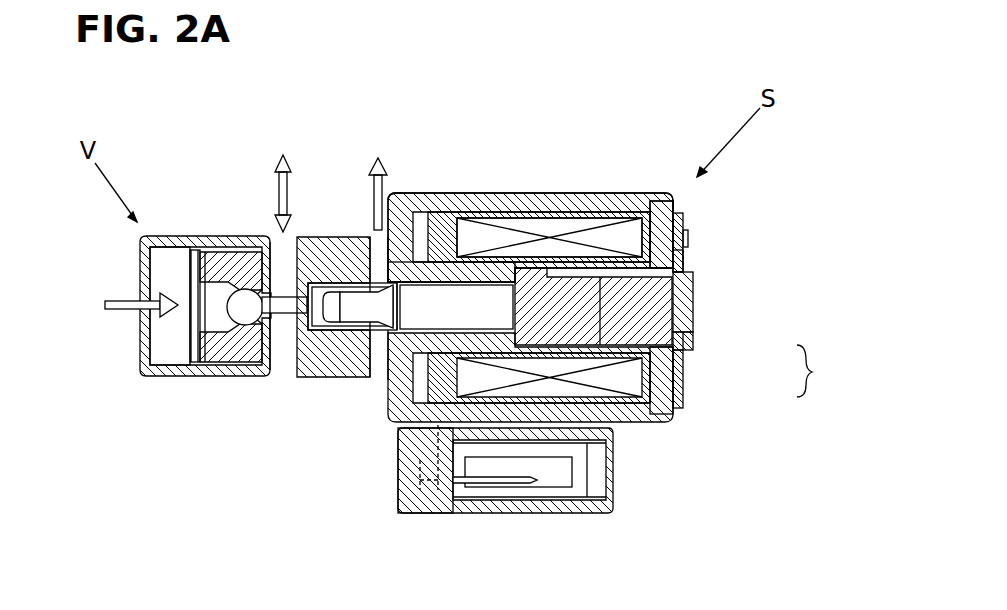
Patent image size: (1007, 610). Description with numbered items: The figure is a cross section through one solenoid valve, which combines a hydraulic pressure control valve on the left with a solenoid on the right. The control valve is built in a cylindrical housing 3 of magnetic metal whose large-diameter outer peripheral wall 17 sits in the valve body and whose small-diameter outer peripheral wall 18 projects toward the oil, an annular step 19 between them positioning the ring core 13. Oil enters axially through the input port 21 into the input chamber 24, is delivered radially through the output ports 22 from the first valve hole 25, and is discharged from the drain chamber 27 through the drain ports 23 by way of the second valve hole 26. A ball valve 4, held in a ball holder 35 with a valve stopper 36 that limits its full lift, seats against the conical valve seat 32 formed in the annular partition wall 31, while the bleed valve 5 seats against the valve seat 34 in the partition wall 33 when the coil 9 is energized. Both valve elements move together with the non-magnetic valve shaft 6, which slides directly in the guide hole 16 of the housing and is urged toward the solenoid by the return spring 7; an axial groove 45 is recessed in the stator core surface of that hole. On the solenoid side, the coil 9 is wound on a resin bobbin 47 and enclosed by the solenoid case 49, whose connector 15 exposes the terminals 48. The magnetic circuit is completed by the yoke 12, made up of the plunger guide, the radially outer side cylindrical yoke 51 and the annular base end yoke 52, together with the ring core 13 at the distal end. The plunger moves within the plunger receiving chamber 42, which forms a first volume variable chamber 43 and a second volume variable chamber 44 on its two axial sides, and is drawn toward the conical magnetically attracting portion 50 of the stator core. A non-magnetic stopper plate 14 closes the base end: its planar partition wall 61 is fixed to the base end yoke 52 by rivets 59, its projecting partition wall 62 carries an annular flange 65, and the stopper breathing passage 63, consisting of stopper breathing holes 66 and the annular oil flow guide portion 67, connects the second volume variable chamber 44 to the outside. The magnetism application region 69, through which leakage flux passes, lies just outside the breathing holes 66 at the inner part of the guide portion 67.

The housing 3 is at (165, 377).
The ball valve 4 is at (218, 365).
The bleed valve 5 is at (322, 377).
The valve shaft 6 is at (470, 295).
The return spring 7 is at (330, 290).
The coil 9 is at (522, 225).
The yoke 12 is at (587, 195).
The ring core 13 is at (395, 240).
The stopper plate 14 is at (683, 222).
The connector 15 is at (500, 515).
The guide hole 16 is at (458, 492).
The outer peripheral wall 17 is at (212, 260).
The outer peripheral wall 18 is at (433, 268).
The annular step 19 is at (410, 196).
The input port 21 is at (143, 315).
The output ports 22 is at (262, 365).
The drain ports 23 is at (376, 378).
The input chamber 24 is at (150, 262).
The first valve hole 25 is at (234, 365).
The second valve hole 26 is at (300, 377).
The drain chamber 27 is at (345, 377).
The partition wall 31 is at (255, 288).
The valve seat 32 is at (248, 310).
The partition wall 33 is at (290, 240).
The valve seat 34 is at (283, 372).
The ball holder 35 is at (200, 260).
The valve stopper 36 is at (195, 365).
The plunger receiving chamber 42 is at (670, 195).
The first volume variable chamber 43 is at (563, 272).
The second volume variable chamber 44 is at (661, 234).
The axial groove 45 is at (445, 225).
The bobbin 47 is at (615, 193).
The terminals 48 is at (533, 482).
The solenoid case 49 is at (398, 445).
The magnetically attracting portion 50 is at (498, 262).
The radially outer side cylindrical yoke 51 is at (530, 237).
The annular base end yoke 52 is at (665, 412).
The rivets 59 is at (684, 240).
The planar partition wall 61 is at (677, 395).
The projecting partition wall 62 is at (693, 305).
The stopper breathing passage 63 is at (819, 371).
The flange 65 is at (692, 340).
The stopper breathing holes 66 is at (693, 265).
The oil flow guide portion 67 is at (695, 338).
The magnetism application region 69 is at (690, 258).